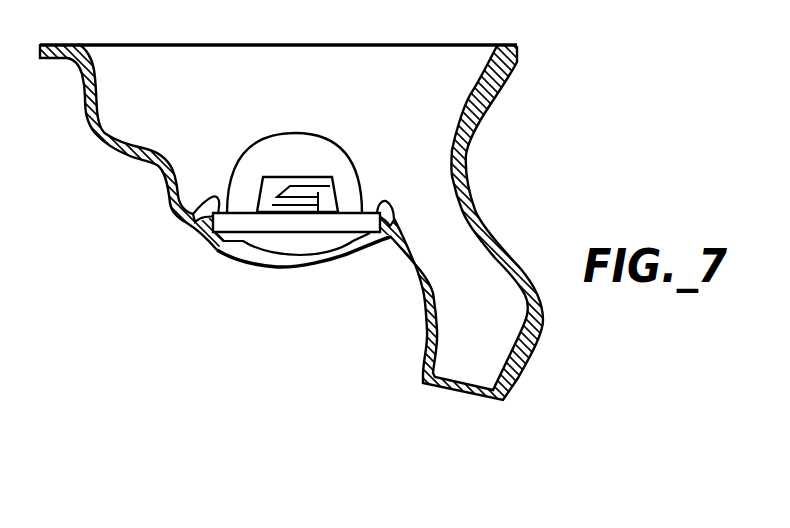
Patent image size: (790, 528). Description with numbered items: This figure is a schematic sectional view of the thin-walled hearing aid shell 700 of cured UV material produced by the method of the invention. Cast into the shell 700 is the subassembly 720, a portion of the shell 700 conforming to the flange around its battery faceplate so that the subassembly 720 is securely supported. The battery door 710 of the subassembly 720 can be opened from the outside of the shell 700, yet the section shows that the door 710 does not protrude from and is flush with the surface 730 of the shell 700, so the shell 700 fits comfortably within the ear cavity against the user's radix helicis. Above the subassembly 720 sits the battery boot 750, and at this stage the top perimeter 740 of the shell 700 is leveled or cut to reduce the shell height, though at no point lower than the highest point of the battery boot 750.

The hearing aid shell 700 is at (476, 156).
The battery door 710 is at (235, 237).
The subassembly 720 is at (317, 127).
The surface 730 is at (274, 278).
The top perimeter 740 is at (358, 36).
The battery boot 750 is at (313, 165).